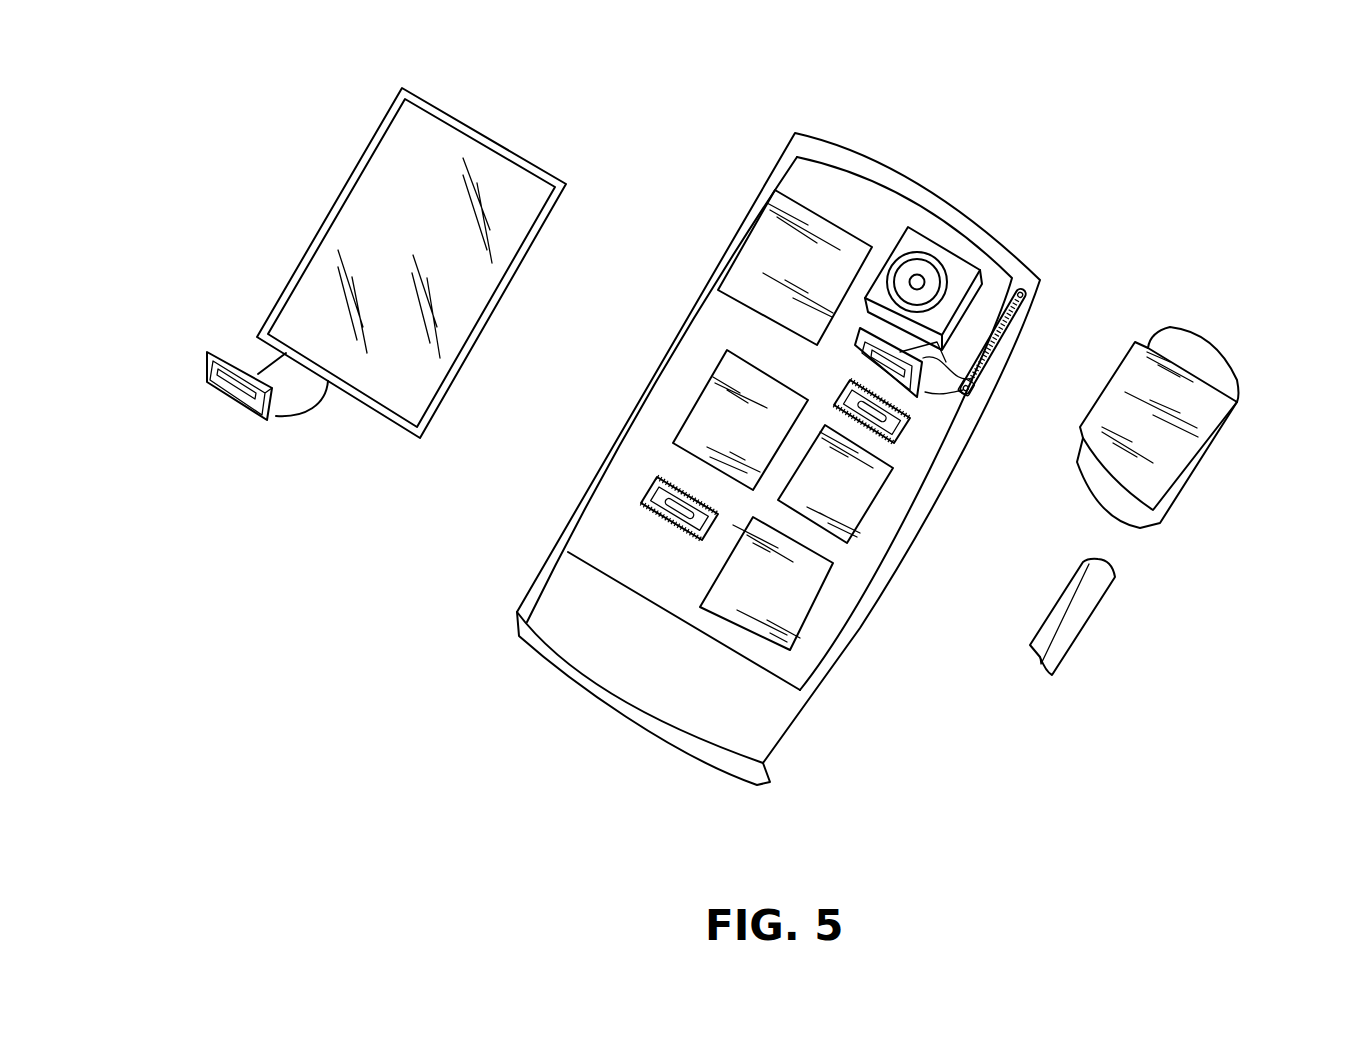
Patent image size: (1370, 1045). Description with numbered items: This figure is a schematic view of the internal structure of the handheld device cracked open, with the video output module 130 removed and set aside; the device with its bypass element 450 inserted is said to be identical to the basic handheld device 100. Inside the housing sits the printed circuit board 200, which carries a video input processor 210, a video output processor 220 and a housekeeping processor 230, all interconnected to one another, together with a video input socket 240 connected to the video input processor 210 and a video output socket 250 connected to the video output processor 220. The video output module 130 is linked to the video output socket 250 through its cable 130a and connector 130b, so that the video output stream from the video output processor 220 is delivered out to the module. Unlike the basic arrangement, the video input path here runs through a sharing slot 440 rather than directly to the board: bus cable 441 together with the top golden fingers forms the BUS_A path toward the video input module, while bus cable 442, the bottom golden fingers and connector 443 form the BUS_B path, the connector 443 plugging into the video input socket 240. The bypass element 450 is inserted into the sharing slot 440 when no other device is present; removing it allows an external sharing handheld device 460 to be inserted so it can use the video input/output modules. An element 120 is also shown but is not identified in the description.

The handheld device 100 is at (777, 147).
The camera module 120 is at (945, 247).
The video output module 130 is at (390, 101).
The cable 130a is at (250, 356).
The connector 130b is at (205, 379).
The printed circuit board 200 is at (750, 255).
The video input processor 210 is at (852, 498).
The video output processor 220 is at (712, 407).
The housekeeping processor 230 is at (797, 592).
The video input socket 240 is at (907, 427).
The video output socket 250 is at (648, 493).
The sharing slot 440 is at (1004, 311).
The bus cable 441 is at (987, 287).
The bus cable 442 is at (932, 370).
The connector 443 is at (972, 398).
The bypass element 450 is at (1085, 603).
The external sharing handheld device 460 is at (1193, 382).